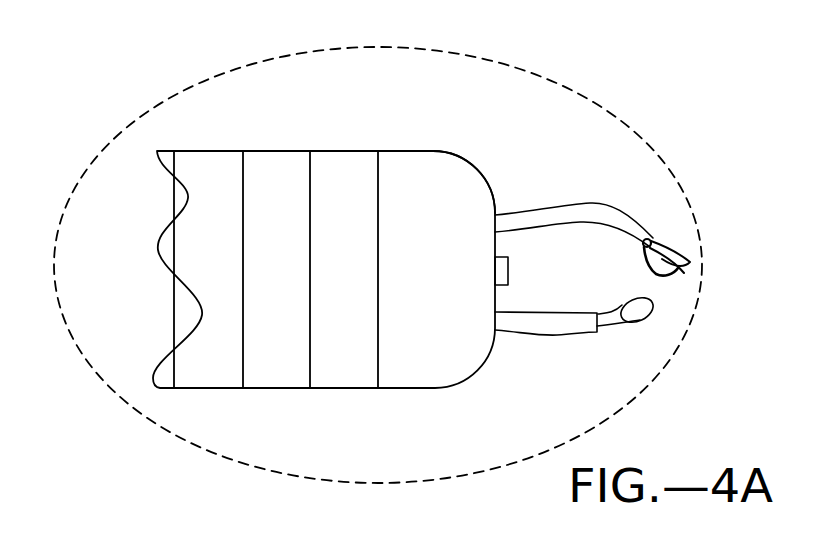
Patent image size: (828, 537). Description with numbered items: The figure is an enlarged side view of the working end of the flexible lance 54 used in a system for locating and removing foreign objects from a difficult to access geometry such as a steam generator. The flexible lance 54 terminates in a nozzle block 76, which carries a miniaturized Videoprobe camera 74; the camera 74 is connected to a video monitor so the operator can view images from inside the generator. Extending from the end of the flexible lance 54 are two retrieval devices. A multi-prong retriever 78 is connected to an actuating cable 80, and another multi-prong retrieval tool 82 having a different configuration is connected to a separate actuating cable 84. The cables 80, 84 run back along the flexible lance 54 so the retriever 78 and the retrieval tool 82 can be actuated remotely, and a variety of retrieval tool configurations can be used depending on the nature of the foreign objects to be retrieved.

The flexible lance 54 is at (243, 151).
The miniaturized Videoprobe camera 74 is at (508, 265).
The nozzle block 76 is at (418, 177).
The multi-prong retriever 78 is at (672, 240).
The actuating cable 80 is at (572, 213).
The multi-prong retrieval tool 82 is at (640, 323).
The actuating cable 84 is at (520, 322).